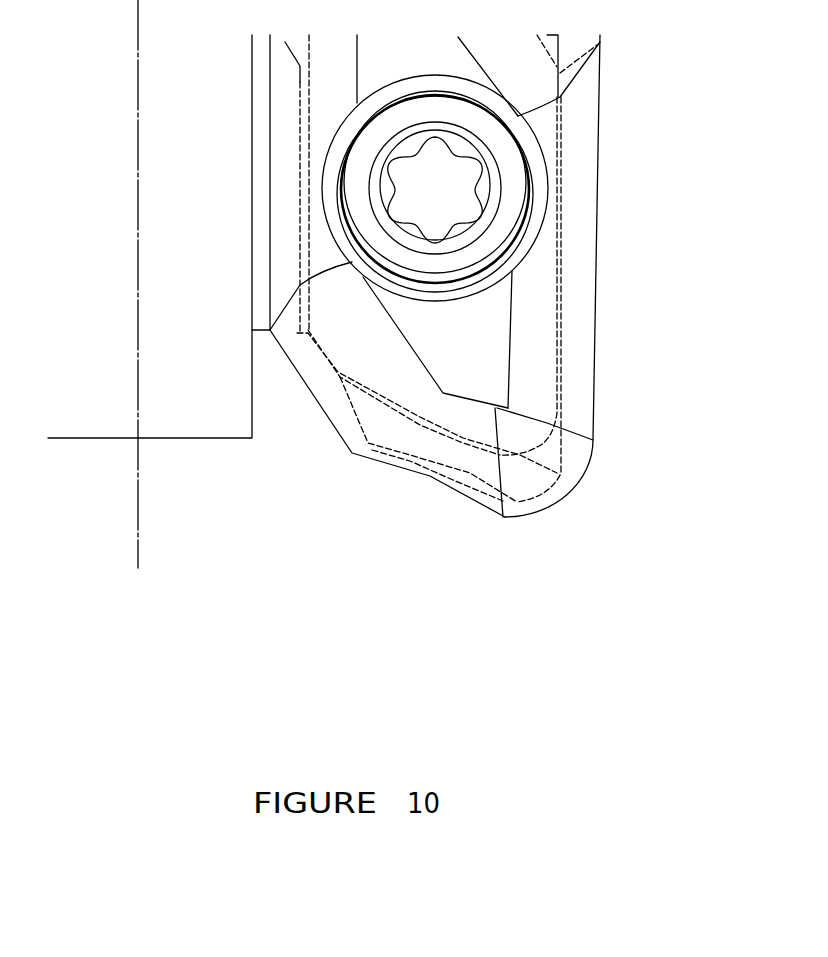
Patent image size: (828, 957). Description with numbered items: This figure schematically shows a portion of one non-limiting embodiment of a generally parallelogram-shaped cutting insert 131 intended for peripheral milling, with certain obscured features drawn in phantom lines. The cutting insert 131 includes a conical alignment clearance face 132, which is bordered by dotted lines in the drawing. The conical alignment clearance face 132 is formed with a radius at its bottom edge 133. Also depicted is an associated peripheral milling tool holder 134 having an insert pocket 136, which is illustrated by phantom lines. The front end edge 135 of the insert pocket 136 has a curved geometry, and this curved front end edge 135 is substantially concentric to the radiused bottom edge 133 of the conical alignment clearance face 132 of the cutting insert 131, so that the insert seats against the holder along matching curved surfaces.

The cutting insert 131 is at (617, 190).
The conical alignment clearance face 132 is at (420, 437).
The bottom edge 133 is at (470, 447).
The peripheral milling tool holder 134 is at (198, 403).
The front end edge 135 is at (390, 405).
The insert pocket 136 is at (530, 352).